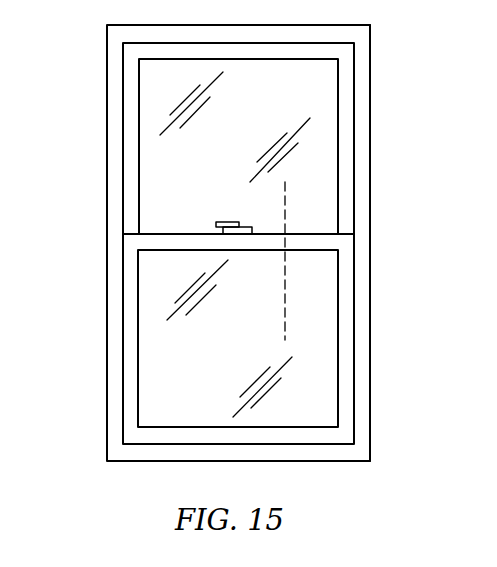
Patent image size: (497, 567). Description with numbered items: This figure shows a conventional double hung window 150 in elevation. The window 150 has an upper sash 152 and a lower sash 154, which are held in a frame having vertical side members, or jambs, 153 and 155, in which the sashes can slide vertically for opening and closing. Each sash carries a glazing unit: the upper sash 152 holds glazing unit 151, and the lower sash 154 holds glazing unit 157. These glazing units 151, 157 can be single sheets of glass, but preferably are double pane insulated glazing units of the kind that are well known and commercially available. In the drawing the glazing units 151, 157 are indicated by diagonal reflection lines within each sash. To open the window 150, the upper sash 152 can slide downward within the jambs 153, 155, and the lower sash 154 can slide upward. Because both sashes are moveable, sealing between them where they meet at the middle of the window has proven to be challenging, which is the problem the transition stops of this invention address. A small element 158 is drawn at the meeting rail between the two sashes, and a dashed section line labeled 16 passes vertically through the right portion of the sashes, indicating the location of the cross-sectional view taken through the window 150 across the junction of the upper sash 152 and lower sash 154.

The double hung window 150 is at (386, 71).
The glazing unit 151 is at (187, 160).
The upper sash 152 is at (132, 93).
The vertical side member (jamb) 153 is at (105, 180).
The lower sash 154 is at (130, 373).
The vertical side member (jamb) 155 is at (370, 108).
The glazing unit 157 is at (183, 346).
The sash lock 158 is at (146, 243).
The section line for FIG. 16 is at (285, 182).